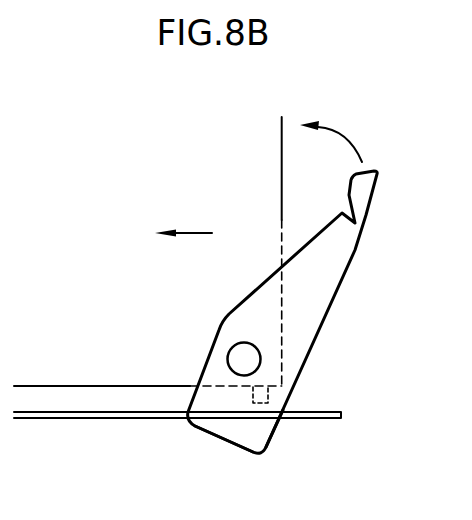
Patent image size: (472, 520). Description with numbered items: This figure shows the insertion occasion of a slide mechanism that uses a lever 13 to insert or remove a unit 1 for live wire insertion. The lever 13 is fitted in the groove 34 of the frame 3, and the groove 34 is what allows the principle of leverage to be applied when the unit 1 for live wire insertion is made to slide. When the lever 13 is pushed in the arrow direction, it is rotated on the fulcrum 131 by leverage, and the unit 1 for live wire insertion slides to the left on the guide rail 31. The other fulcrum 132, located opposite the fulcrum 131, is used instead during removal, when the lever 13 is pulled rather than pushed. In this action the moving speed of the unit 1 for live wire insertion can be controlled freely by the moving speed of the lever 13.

The unit for live wire insertion 1 is at (282, 137).
The lever 13 is at (330, 306).
The fulcrum 131 is at (298, 418).
The fulcrum 132 is at (165, 417).
The frame 3 is at (73, 418).
The guide rail 31 is at (132, 398).
The groove 34 is at (213, 417).